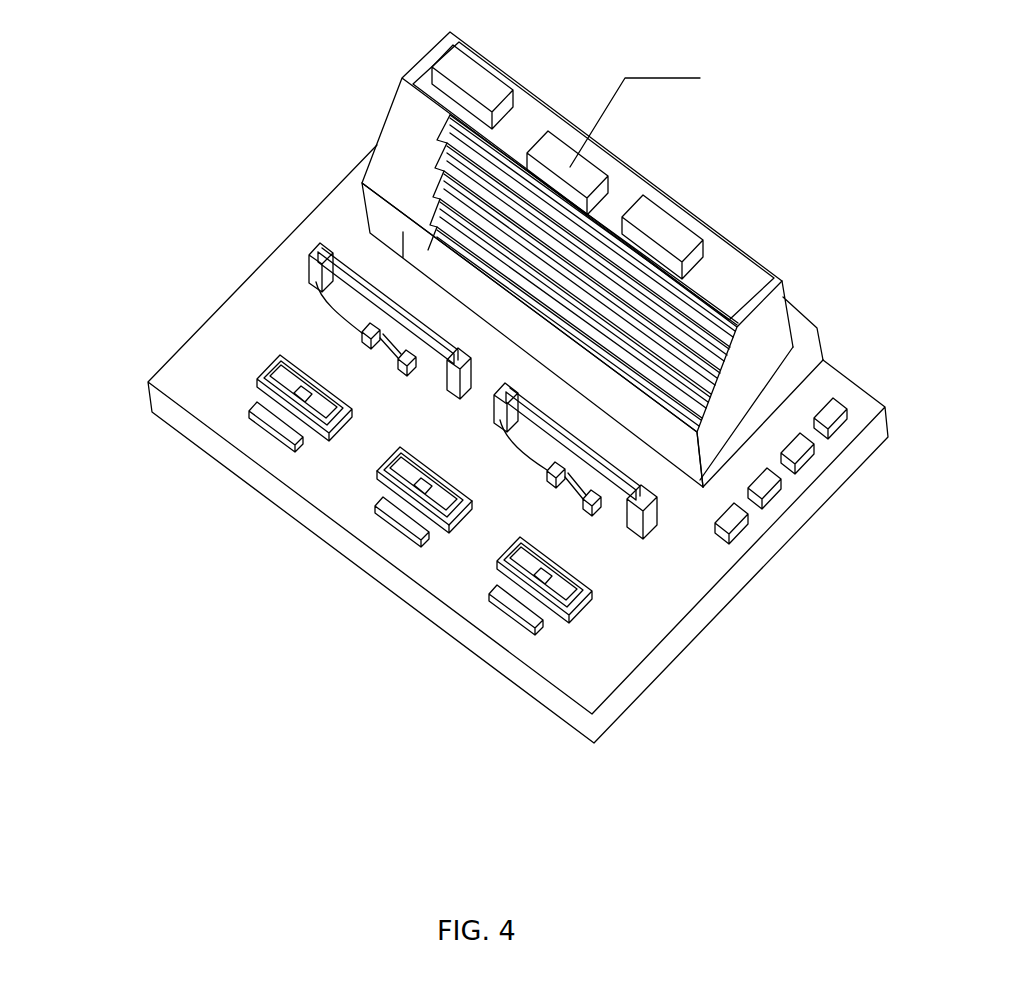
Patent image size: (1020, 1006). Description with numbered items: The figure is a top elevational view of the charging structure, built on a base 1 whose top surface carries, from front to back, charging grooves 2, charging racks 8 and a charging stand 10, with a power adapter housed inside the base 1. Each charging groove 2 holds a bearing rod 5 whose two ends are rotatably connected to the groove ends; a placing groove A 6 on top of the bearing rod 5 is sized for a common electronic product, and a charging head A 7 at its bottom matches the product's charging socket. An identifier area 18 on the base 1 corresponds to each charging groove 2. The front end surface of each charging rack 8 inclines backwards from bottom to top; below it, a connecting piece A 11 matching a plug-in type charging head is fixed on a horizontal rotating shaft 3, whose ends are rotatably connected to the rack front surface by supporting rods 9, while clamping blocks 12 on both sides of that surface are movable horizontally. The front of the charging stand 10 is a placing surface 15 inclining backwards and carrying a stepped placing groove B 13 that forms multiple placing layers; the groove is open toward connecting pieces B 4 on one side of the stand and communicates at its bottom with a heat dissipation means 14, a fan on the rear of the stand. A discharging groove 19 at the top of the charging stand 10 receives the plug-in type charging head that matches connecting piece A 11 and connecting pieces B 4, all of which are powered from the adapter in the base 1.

The base 1 is at (265, 307).
The charging groove 2 is at (268, 357).
The horizontal rotating shaft 3 is at (372, 330).
The connecting piece B 4 is at (833, 412).
The bearing rod 5 is at (388, 470).
The placing groove A 6 is at (451, 510).
The charging head A 7 is at (420, 505).
The charging rack 8 is at (343, 250).
The supporting rod 9 is at (596, 516).
The charging stand 10 is at (775, 350).
The connecting piece A 11 is at (330, 437).
The clamping block 12 is at (640, 525).
The placing groove B 13 is at (722, 367).
The heat dissipation means 14 is at (793, 336).
The placing surface 15 is at (393, 148).
The identifier area 18 is at (533, 620).
The discharging groove 19 is at (735, 287).